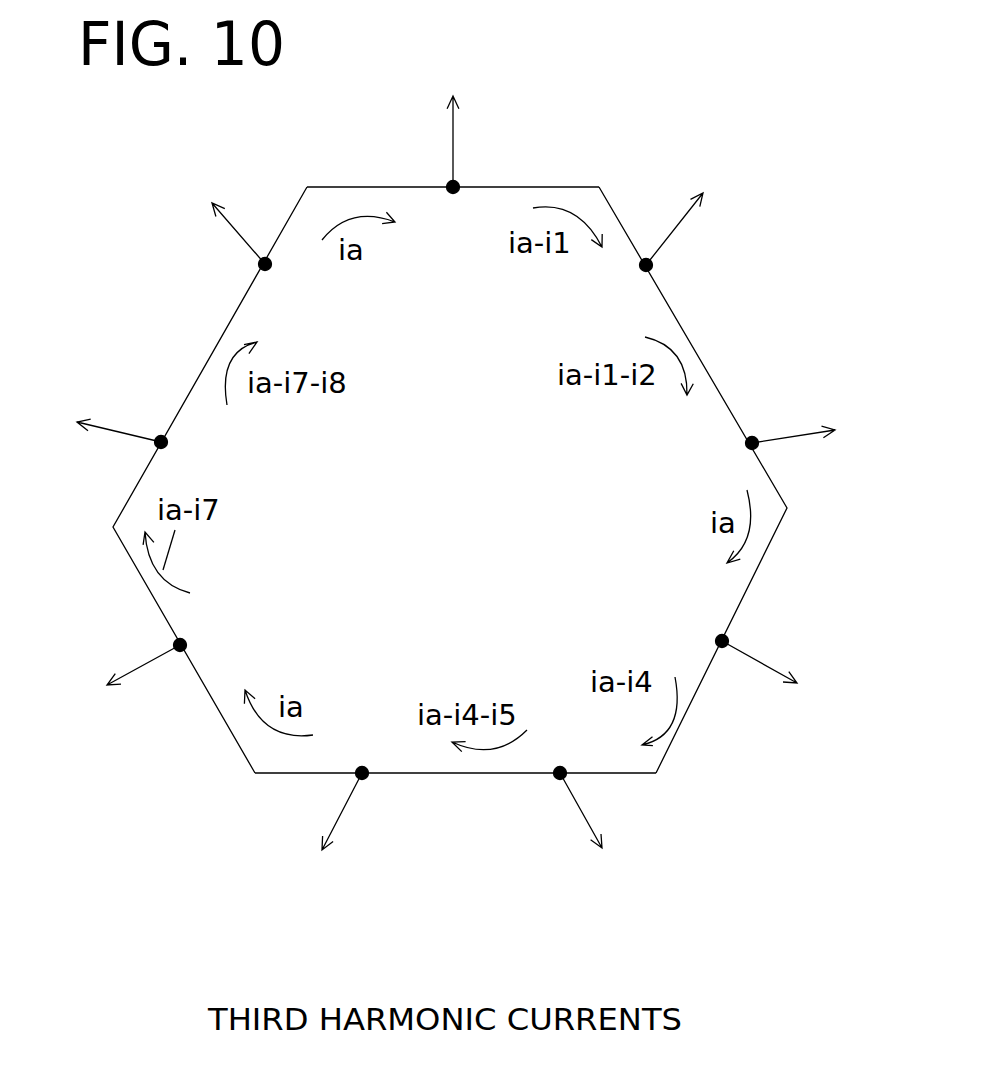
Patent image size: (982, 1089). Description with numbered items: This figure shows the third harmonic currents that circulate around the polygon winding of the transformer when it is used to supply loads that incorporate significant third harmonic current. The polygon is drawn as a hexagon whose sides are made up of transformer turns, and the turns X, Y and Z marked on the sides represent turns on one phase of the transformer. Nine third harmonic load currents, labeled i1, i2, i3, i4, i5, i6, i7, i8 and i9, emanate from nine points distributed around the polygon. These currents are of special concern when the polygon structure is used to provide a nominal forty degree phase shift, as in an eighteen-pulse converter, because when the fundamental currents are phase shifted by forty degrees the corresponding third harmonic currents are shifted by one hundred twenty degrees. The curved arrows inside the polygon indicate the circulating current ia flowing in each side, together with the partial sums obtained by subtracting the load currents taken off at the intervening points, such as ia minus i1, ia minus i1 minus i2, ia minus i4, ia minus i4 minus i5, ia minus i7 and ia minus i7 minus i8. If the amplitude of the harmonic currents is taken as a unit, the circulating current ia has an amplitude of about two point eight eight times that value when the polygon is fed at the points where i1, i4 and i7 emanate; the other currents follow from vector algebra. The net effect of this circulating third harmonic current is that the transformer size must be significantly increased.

The third harmonic load current i1 is at (451, 122).
The third harmonic load current i2 is at (688, 223).
The third harmonic load current i3 is at (816, 428).
The third harmonic load current i4 is at (781, 674).
The third harmonic load current i5 is at (589, 848).
The third harmonic load current i6 is at (342, 848).
The third harmonic load current i7 is at (115, 683).
The third harmonic load current i8 is at (93, 429).
The third harmonic load current i9 is at (215, 210).
The turns X is at (542, 187).
The turns Y is at (645, 774).
The turns Z is at (496, 774).